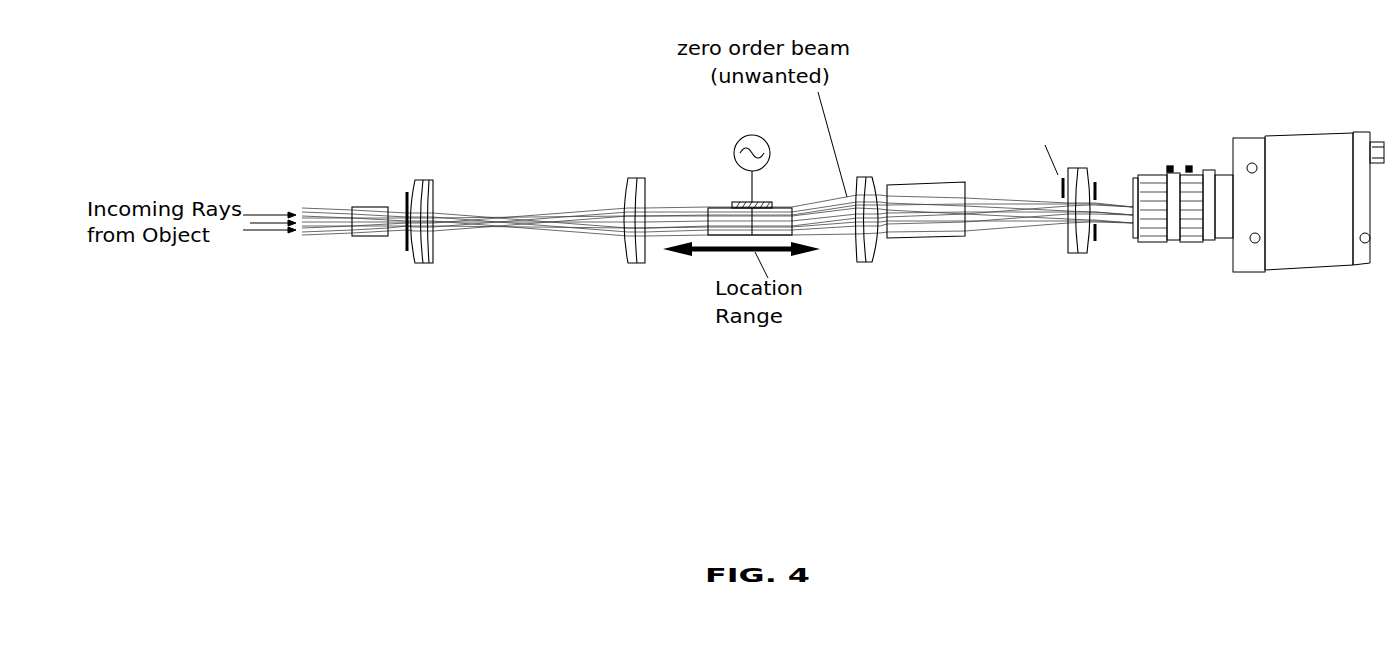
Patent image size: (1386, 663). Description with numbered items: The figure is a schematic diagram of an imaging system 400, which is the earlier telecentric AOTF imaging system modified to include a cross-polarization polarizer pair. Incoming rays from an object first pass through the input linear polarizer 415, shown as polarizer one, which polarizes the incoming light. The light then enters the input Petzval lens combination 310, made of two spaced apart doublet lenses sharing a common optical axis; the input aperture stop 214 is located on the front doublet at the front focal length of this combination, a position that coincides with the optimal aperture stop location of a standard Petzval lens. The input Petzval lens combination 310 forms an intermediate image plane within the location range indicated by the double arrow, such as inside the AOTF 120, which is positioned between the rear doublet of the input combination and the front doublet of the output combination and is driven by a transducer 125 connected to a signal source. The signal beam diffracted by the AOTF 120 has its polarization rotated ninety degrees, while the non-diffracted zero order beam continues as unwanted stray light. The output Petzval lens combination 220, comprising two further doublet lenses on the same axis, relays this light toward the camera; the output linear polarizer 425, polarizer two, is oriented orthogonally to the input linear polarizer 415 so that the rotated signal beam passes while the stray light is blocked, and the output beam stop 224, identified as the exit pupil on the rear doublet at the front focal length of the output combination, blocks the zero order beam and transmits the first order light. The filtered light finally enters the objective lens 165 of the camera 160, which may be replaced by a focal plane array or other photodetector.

The imaging system 400 is at (340, 355).
The input linear polarizer 415 is at (371, 207).
The input aperture stop 214 is at (405, 262).
The input Petzval lens combination 310 is at (522, 149).
The transducer 125 is at (732, 201).
The AOTF 120 is at (720, 215).
The output Petzval lens combination 220 is at (968, 148).
The output linear polarizer 425 is at (932, 245).
The output beam stop 224 is at (1112, 270).
The objective lens 165 is at (1183, 175).
The camera 160 is at (1303, 233).